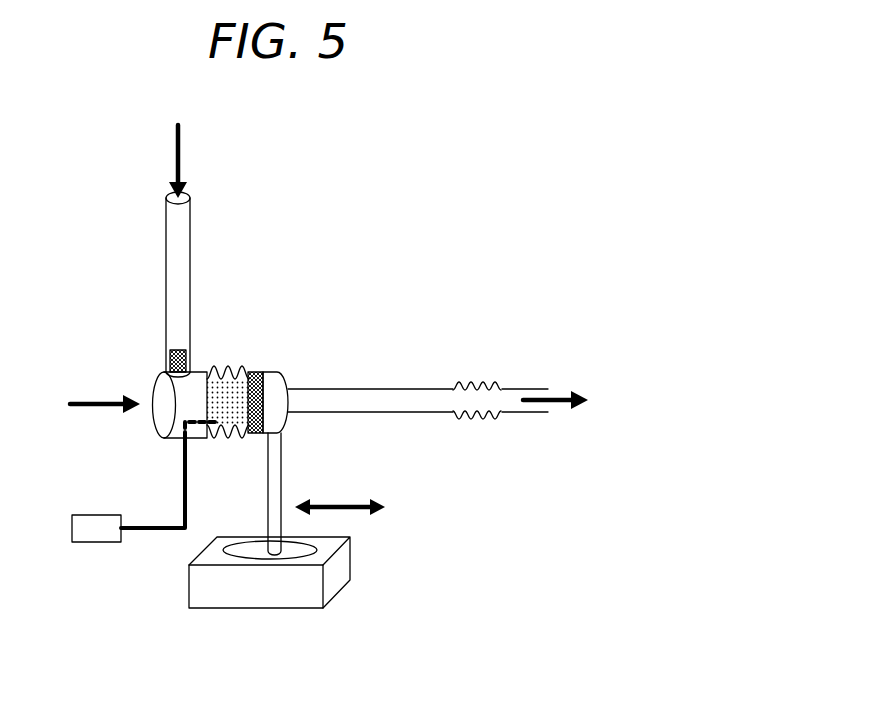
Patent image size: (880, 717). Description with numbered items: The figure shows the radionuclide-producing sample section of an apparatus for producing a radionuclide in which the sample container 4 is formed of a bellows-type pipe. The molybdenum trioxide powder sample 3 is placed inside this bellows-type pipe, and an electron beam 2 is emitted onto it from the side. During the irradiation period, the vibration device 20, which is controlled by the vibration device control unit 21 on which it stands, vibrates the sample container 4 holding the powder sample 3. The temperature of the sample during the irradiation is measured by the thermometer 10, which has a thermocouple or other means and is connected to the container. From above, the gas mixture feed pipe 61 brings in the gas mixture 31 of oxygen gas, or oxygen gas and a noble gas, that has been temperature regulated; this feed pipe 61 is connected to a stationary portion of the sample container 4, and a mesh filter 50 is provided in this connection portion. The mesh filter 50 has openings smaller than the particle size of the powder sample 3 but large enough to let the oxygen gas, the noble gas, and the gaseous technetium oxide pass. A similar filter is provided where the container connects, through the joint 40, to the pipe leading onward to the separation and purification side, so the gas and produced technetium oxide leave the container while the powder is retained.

The electron beam 2 is at (97, 396).
The molybdenum trioxide powder sample 3 is at (250, 368).
The sample container 4 is at (237, 352).
The thermometer 10 is at (95, 533).
The vibration device 20 is at (283, 456).
The vibration device control unit 21 is at (343, 567).
The gas mixture 31 is at (182, 162).
The joint 40 is at (477, 382).
The mesh filter 50 is at (187, 350).
The gas mixture feed pipe 61 is at (190, 267).